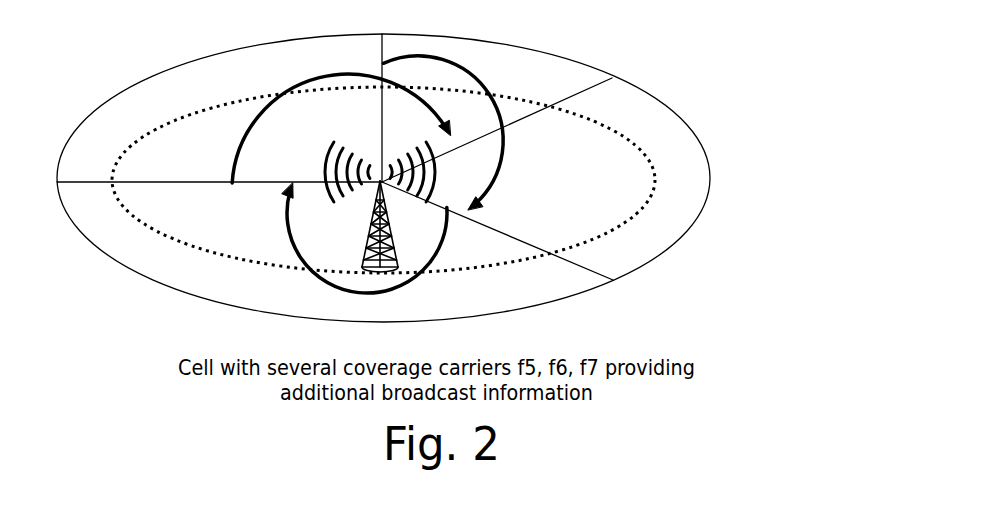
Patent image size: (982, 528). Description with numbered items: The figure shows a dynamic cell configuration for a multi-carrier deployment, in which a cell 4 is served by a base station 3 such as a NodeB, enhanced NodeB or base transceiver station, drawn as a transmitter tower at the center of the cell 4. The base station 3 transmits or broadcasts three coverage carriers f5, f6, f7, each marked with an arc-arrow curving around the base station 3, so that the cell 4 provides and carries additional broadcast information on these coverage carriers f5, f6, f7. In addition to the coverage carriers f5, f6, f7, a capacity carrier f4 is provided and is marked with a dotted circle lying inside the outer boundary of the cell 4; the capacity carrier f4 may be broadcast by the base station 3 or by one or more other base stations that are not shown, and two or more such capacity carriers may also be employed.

The base station 3 is at (387, 245).
The cell 4 is at (656, 252).
The capacity carrier f4 is at (397, 180).
The coverage carrier f5 is at (341, 121).
The coverage carrier f6 is at (458, 133).
The coverage carrier f7 is at (364, 249).